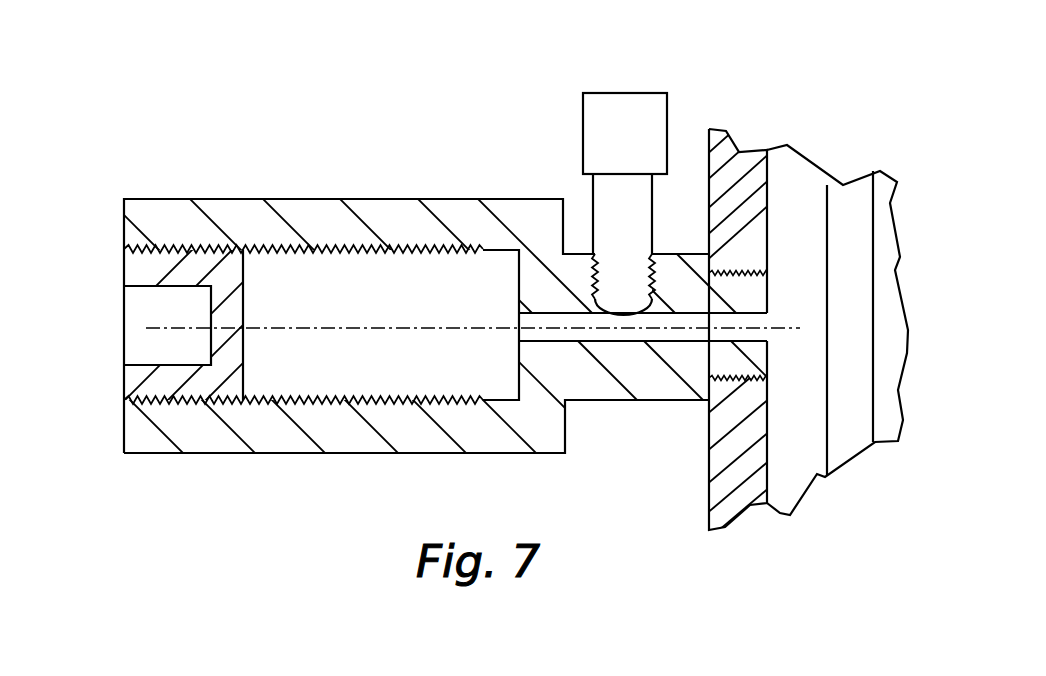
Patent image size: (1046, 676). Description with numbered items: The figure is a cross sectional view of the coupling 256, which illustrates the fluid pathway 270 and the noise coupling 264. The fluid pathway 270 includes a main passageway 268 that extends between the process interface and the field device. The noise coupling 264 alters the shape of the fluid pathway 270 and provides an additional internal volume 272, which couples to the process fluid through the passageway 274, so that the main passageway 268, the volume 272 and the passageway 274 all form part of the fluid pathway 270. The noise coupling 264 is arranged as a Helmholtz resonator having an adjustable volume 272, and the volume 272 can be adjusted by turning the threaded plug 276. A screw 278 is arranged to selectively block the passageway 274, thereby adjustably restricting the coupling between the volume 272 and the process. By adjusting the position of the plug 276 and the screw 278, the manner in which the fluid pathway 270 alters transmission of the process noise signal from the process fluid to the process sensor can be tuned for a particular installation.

The coupling 256 is at (497, 153).
The noise coupling 264 is at (245, 199).
The main passageway 268 is at (848, 410).
The fluid pathway 270 is at (358, 378).
The adjustable volume 272 is at (430, 275).
The passageway 274 is at (672, 330).
The threaded plug 276 is at (142, 268).
The screw 278 is at (598, 128).